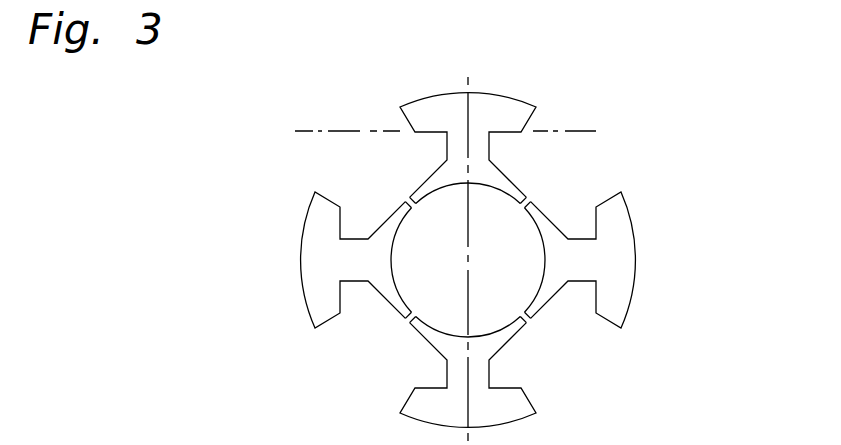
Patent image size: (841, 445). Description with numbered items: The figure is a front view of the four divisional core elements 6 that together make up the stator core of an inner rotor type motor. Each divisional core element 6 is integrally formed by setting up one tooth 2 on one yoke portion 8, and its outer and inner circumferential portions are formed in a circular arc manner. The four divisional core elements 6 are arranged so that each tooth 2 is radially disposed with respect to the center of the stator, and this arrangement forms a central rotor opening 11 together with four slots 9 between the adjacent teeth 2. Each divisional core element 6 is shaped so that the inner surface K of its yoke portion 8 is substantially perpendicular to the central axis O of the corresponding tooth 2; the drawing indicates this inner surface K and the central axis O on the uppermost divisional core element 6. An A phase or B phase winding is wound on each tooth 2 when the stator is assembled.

The tooth 2 is at (471, 260).
The divisional core element 6 is at (638, 257).
The yoke portion 8 is at (325, 224).
The slot 9 is at (370, 212).
The rotor opening 11 is at (505, 280).
The central axis O is at (479, 242).
The inner surface K is at (460, 138).